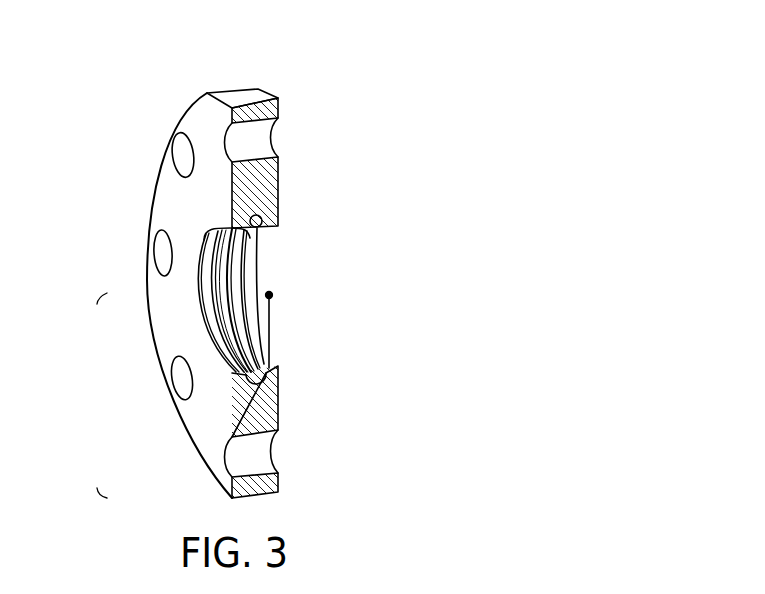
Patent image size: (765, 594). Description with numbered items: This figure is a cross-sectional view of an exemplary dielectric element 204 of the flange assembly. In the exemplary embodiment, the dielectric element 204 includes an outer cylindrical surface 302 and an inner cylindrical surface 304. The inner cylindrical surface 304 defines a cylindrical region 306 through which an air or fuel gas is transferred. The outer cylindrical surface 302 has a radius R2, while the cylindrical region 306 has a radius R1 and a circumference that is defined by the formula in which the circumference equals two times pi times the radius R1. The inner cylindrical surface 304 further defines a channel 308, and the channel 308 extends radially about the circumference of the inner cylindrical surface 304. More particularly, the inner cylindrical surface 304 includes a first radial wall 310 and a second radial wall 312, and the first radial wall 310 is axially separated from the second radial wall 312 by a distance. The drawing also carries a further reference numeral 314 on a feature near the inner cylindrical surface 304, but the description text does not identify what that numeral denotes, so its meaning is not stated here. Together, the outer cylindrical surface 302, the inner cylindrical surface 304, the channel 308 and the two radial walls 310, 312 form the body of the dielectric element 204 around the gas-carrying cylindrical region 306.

The dielectric element 204 is at (370, 78).
The outer cylindrical surface 302 is at (260, 90).
The inner cylindrical surface 304 is at (278, 214).
The cylindrical region 306 is at (347, 215).
The channel 308 is at (263, 206).
The first radial wall 310 is at (234, 378).
The second radial wall 312 is at (272, 372).
The seal ring surface 314 is at (256, 247).
The radius of cylindrical region R1 is at (283, 292).
The radius of outer cylindrical surface R2 is at (96, 389).